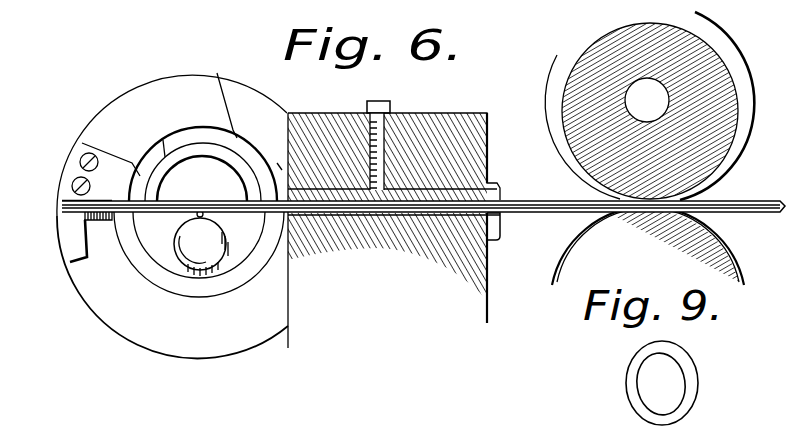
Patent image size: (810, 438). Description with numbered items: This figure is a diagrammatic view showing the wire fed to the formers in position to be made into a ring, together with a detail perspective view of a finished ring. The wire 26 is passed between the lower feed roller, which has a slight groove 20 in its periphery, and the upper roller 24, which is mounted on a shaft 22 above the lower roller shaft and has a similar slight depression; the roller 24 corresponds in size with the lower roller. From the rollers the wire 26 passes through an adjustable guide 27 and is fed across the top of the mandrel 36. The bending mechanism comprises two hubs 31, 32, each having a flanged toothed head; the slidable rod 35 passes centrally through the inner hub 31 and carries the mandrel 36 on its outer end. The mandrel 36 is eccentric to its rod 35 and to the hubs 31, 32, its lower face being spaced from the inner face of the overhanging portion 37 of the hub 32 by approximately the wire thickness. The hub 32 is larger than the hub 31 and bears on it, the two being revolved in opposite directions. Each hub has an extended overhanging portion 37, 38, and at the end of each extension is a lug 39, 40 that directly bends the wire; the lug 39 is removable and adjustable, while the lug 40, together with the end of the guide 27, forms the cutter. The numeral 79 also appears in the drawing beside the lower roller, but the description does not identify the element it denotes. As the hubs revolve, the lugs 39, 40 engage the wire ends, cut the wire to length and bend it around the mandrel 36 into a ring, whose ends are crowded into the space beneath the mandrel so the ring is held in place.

The groove 20 is at (570, 248).
The shaft 22 is at (652, 95).
The roller 24 is at (551, 86).
The wire 26 is at (735, 200).
The guide 27 is at (497, 185).
The inner hub 31 is at (148, 152).
The hub 32 is at (172, 216).
The slidable rod 35 is at (217, 168).
The mandrel 36 is at (201, 243).
The overhanging portion 37 is at (159, 124).
The overhanging portion 38 is at (268, 170).
The lug 39 is at (118, 185).
The lug 40 is at (270, 185).
The covering of lower roller 79 is at (732, 246).